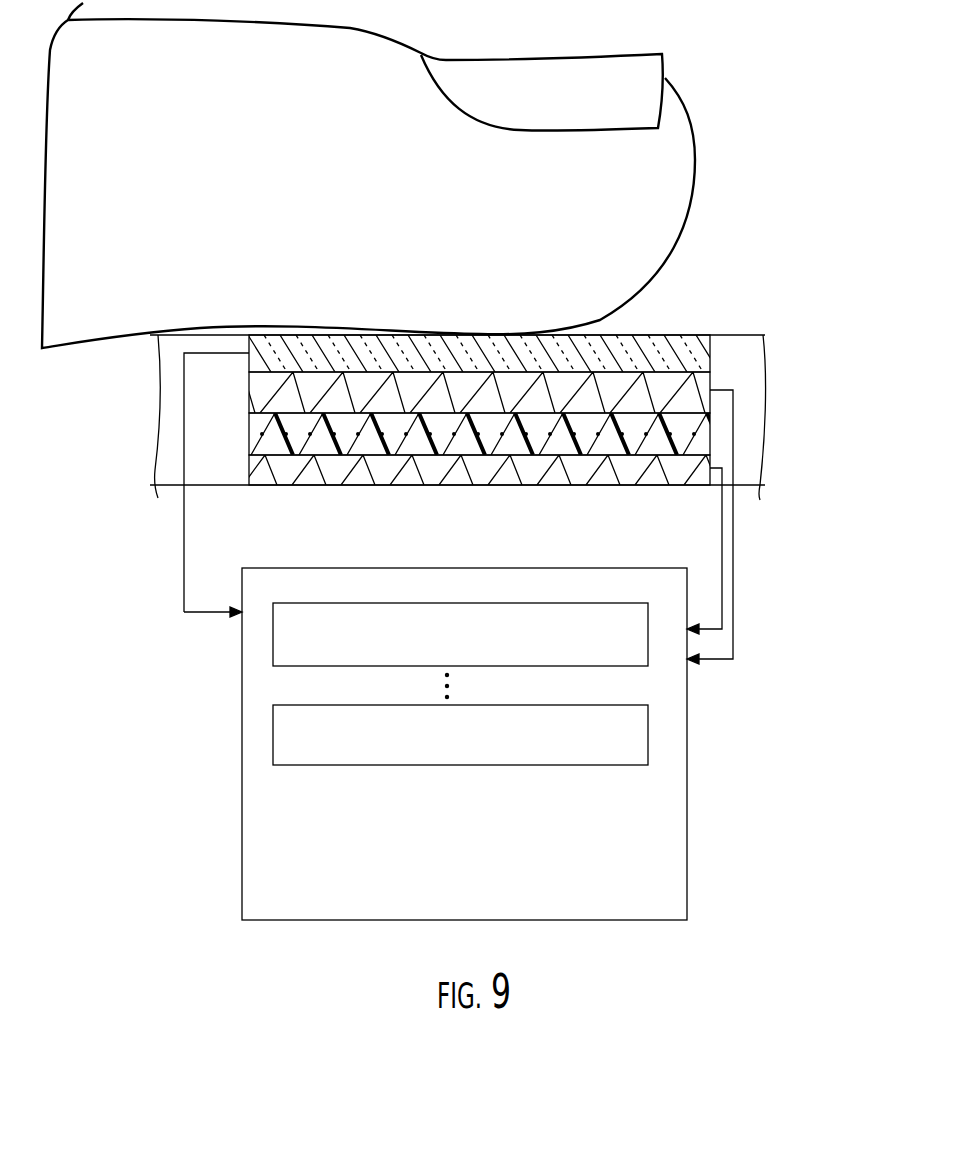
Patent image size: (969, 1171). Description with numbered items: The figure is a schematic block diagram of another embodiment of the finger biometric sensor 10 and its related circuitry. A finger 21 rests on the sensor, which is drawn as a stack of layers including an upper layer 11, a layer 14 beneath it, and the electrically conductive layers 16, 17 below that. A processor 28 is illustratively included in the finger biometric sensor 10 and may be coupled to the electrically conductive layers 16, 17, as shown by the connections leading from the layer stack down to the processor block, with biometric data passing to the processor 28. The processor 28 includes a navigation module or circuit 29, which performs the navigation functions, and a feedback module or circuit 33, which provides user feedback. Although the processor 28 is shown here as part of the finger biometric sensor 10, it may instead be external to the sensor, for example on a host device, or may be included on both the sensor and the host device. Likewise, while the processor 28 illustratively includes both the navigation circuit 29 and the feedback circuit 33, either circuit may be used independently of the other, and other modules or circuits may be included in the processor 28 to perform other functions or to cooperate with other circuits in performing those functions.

The finger 21 is at (694, 176).
The finger biometric sensor 10 is at (648, 314).
The dielectric layer 11 is at (680, 353).
The finger sensing layer 14 is at (249, 393).
The electrically conductive layer 16 is at (249, 434).
The electrically conductive layer 17 is at (249, 471).
The processor 28 is at (262, 569).
The navigation circuit 29 is at (627, 628).
The feedback circuit 33 is at (632, 723).